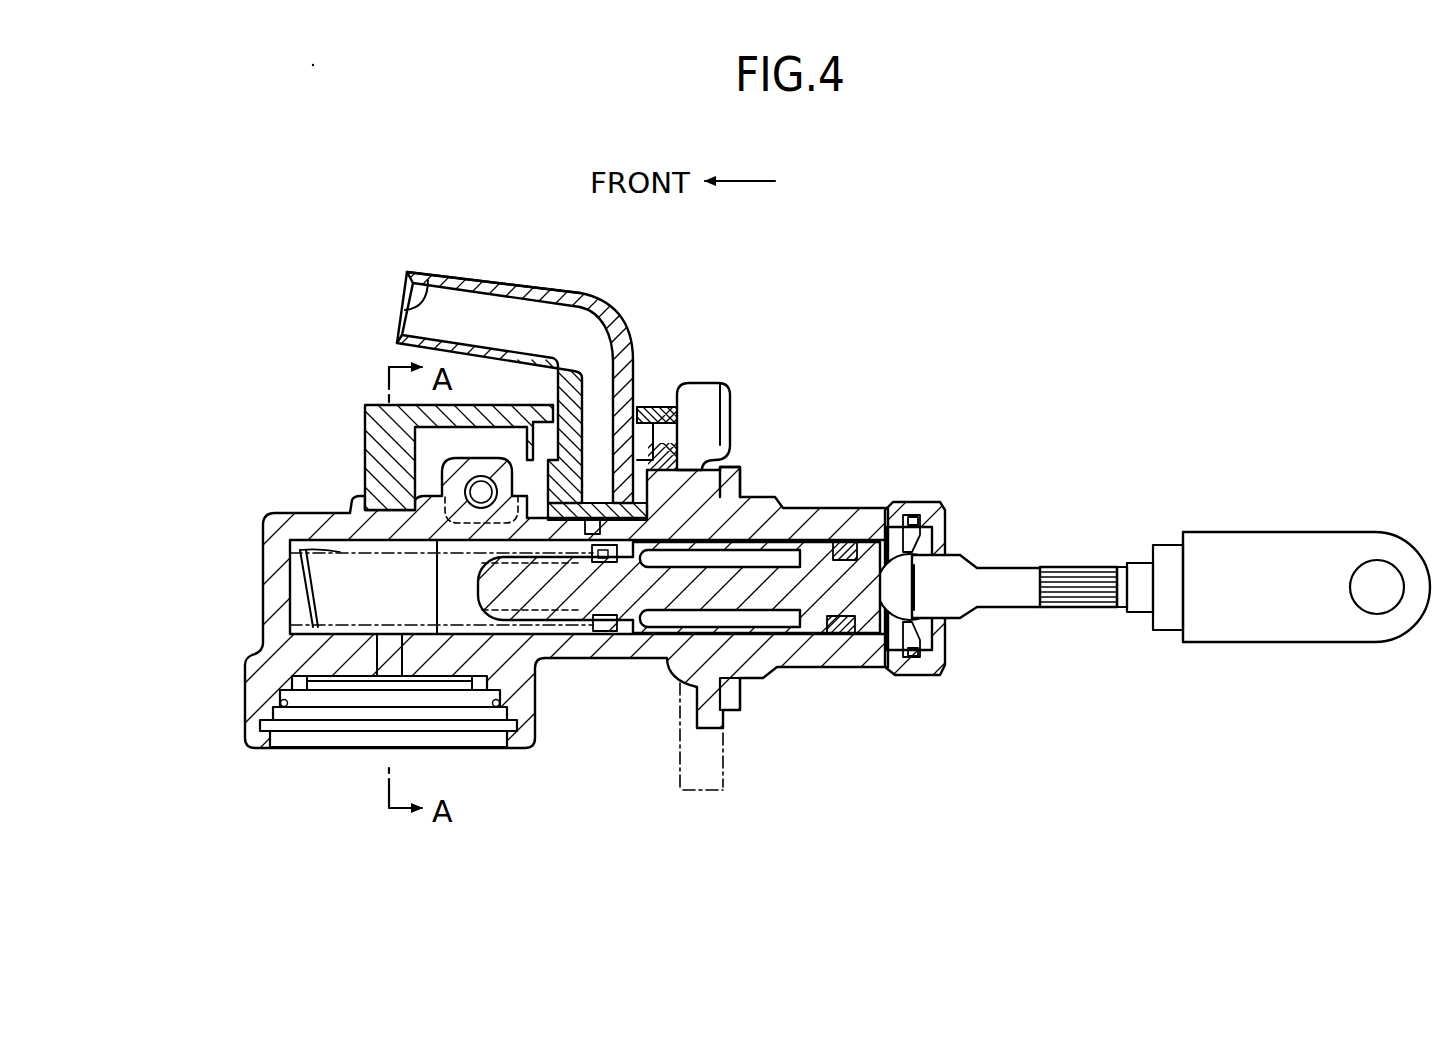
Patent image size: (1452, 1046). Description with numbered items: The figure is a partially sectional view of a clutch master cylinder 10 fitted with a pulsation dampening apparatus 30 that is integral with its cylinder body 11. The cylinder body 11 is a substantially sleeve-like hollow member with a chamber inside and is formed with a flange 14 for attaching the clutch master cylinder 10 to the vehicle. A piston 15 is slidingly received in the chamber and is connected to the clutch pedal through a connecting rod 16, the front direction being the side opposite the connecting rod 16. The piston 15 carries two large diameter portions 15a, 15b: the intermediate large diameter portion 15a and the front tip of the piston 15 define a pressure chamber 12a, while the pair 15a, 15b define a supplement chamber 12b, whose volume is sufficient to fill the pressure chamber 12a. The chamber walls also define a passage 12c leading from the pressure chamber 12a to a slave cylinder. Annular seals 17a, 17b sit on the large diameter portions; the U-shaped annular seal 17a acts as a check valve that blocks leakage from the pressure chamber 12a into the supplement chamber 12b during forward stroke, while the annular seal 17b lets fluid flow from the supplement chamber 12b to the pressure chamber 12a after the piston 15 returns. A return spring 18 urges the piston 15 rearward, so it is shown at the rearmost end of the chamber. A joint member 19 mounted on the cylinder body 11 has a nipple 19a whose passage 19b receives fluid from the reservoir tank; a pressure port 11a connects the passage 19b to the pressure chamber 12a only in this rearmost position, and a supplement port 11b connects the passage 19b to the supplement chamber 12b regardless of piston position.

The clutch master cylinder 10 is at (883, 323).
The cylinder body 11 is at (870, 648).
The pressure port 11a is at (597, 503).
The supplement port 11b is at (700, 450).
The pressure chamber 12a is at (345, 588).
The supplement chamber 12b is at (743, 617).
The passage 12c is at (355, 510).
The flange 14 is at (712, 457).
The piston 15 is at (767, 587).
The large diameter portion 15a is at (623, 628).
The large diameter portion 15b is at (867, 553).
The connecting rod 16 is at (1013, 580).
The annular seal 17a is at (605, 630).
The annular seal 17b is at (852, 633).
The return spring 18 is at (330, 548).
The joint member 19 is at (573, 374).
The nipple 19a is at (503, 287).
The passage 19b is at (432, 305).
The pulsation dampening apparatus 30 is at (212, 712).